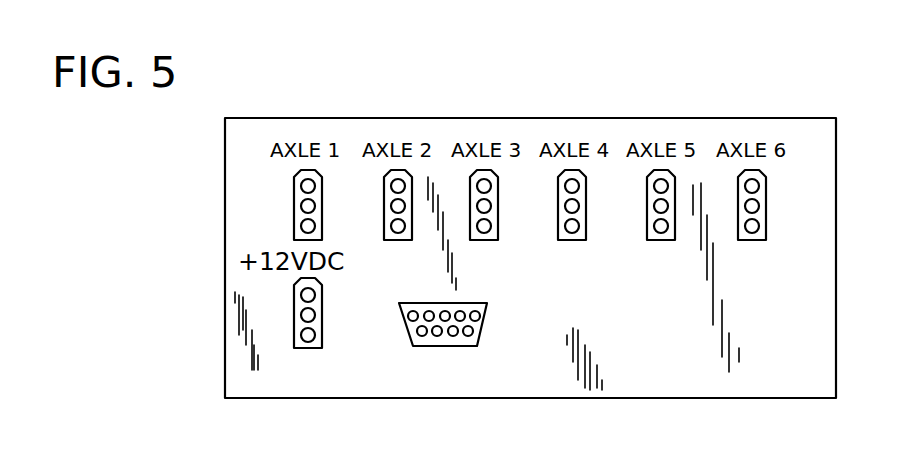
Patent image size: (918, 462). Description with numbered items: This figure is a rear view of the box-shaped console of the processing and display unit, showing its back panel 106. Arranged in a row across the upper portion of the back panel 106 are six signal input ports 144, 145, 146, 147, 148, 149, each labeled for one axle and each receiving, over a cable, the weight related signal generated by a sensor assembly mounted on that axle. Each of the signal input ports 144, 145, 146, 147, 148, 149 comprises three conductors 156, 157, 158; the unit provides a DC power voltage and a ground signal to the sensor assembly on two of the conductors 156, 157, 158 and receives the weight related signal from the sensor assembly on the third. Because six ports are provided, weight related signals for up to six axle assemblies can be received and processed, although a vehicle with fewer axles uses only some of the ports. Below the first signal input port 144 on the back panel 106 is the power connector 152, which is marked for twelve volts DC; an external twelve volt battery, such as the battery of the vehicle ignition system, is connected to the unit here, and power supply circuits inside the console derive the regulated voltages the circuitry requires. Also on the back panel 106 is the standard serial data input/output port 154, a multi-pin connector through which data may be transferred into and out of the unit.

The back panel 106 is at (225, 290).
The signal input port 144 is at (256, 248).
The signal input port 145 is at (391, 240).
The signal input port 146 is at (487, 240).
The signal input port 147 is at (573, 240).
The signal input port 148 is at (661, 240).
The signal input port 149 is at (752, 240).
The power connector 152 is at (292, 325).
The RS-232 standard data input/output port 154 is at (453, 346).
The conductor 156 is at (300, 186).
The conductor 157 is at (300, 206).
The conductor 158 is at (298, 225).